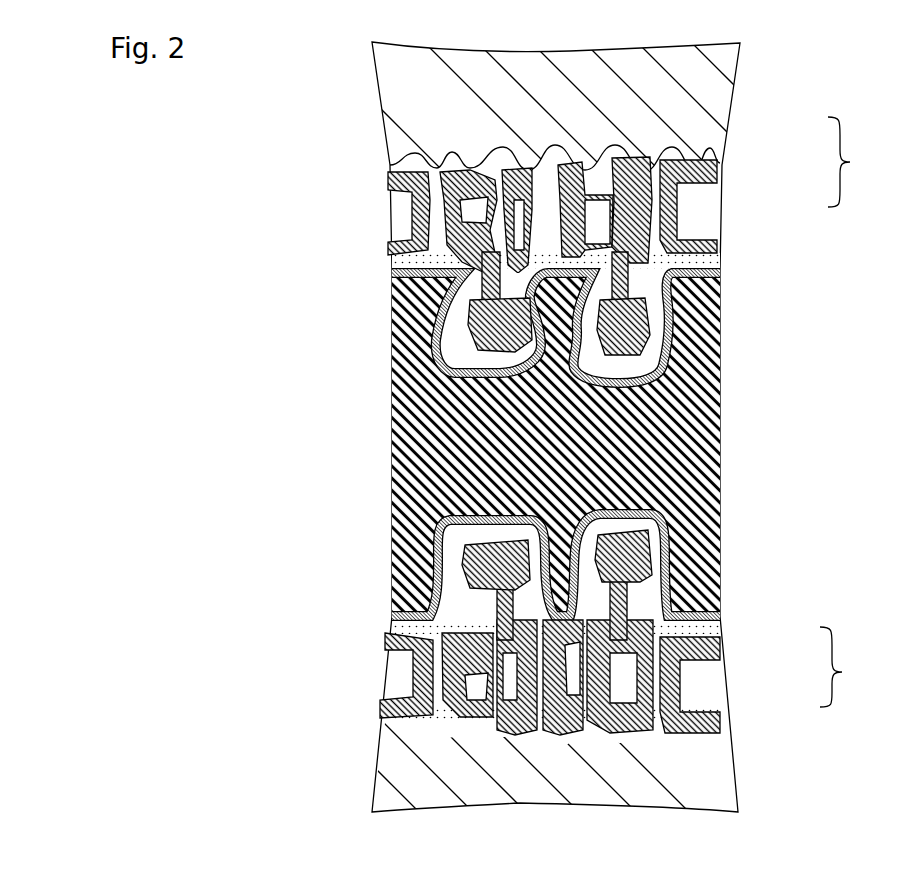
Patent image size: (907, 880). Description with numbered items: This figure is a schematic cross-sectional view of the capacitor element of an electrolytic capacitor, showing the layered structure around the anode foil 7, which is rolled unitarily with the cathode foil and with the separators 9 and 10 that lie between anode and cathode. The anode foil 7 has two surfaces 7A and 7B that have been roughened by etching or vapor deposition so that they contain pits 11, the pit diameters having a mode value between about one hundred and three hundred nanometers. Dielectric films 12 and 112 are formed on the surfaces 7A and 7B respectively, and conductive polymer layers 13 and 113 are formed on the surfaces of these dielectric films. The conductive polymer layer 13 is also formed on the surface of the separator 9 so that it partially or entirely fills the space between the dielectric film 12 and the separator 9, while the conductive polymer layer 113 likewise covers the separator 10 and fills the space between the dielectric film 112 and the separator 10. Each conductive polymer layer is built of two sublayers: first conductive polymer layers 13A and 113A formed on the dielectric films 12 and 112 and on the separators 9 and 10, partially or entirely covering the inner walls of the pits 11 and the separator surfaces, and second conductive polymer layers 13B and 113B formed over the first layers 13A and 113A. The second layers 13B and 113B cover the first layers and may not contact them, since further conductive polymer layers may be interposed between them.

The anode foil 7 is at (700, 382).
The surface of anode foil 7A is at (395, 610).
The surface of anode foil 7B is at (395, 268).
The separator 9 is at (680, 763).
The separator 10 is at (710, 115).
The pits 11 is at (395, 488).
The dielectric film 12 is at (717, 613).
The conductive polymer layer 13 is at (853, 667).
The first conductive polymer layer 13A is at (720, 640).
The second conductive polymer layer 13B is at (700, 682).
The dielectric film 112 is at (722, 272).
The conductive polymer layer 113 is at (864, 162).
The first conductive polymer layer 113A is at (706, 168).
The second conductive polymer layer 113B is at (710, 185).